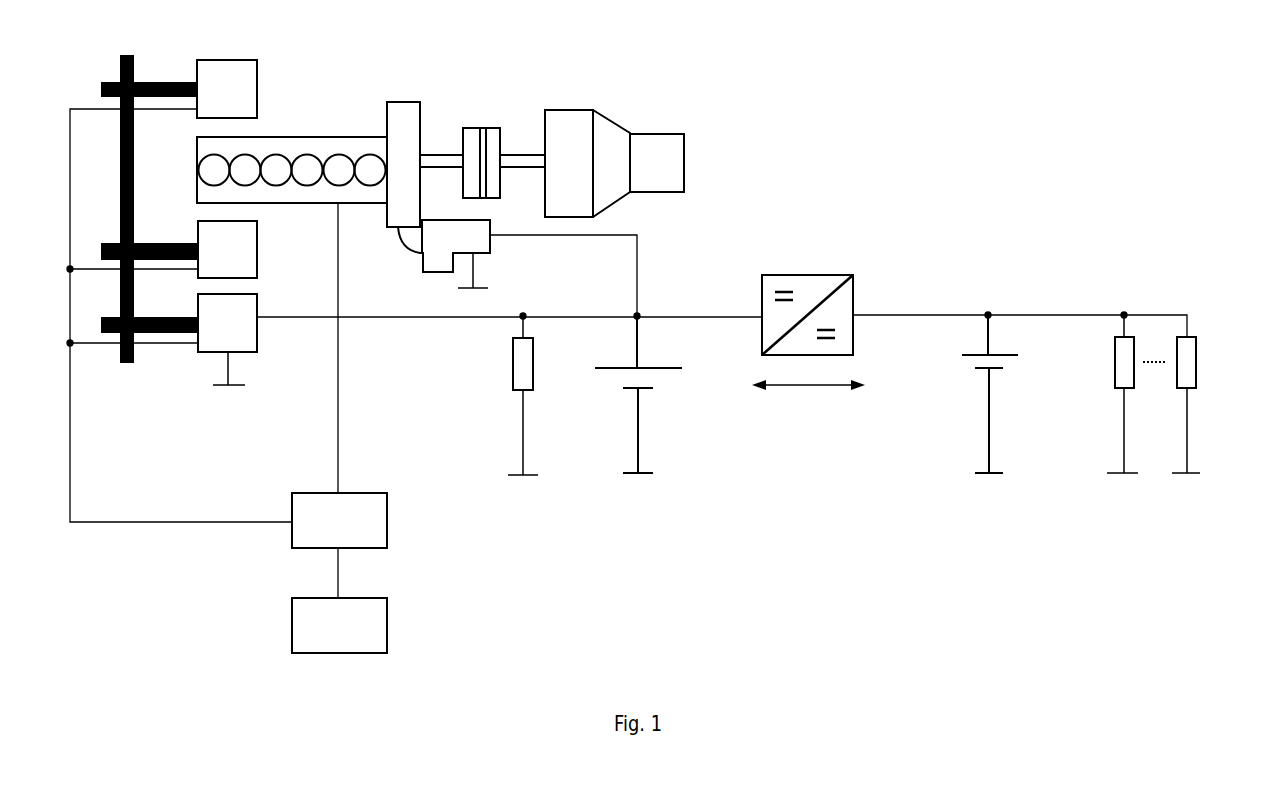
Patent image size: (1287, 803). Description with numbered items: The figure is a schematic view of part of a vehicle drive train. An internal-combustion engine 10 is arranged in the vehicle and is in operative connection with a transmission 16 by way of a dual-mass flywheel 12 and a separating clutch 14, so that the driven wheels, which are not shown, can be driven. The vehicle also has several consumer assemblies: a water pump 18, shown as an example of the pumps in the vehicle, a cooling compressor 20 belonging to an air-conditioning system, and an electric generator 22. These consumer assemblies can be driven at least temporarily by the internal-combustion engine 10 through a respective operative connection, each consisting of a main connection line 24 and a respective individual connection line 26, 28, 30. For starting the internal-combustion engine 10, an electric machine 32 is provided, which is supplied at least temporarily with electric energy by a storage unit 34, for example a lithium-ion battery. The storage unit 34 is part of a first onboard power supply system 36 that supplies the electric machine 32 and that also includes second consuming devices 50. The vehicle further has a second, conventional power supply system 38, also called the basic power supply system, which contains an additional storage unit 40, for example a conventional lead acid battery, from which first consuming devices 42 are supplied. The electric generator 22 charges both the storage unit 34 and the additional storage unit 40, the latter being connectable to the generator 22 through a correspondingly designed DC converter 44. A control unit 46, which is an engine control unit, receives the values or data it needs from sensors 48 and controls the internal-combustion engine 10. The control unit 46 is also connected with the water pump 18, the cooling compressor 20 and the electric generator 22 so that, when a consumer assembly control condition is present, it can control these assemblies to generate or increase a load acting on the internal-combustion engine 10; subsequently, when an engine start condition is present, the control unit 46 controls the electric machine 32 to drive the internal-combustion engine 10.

The internal-combustion engine 10 is at (287, 135).
The dual-mass flywheel 12 is at (399, 100).
The separating clutch 14 is at (472, 125).
The transmission 16 is at (577, 108).
The water pump 18 is at (222, 58).
The cooling compressor 20 is at (257, 245).
The electric generator 22 is at (257, 340).
The main connection line 24 is at (150, 160).
The individual connection line 26 is at (150, 80).
The individual connection line 28 is at (147, 243).
The individual connection line 30 is at (150, 317).
The electric machine 32 is at (490, 253).
The storage unit 34 is at (653, 393).
The first onboard power supply system 36 is at (547, 520).
The second power supply system 38 is at (1084, 240).
The additional storage unit 40 is at (1000, 377).
The first consuming devices 42 is at (1210, 356).
The DC converter 44 is at (820, 275).
The control unit 46 is at (387, 518).
The sensors 48 is at (387, 630).
The second consuming devices 50 is at (533, 377).